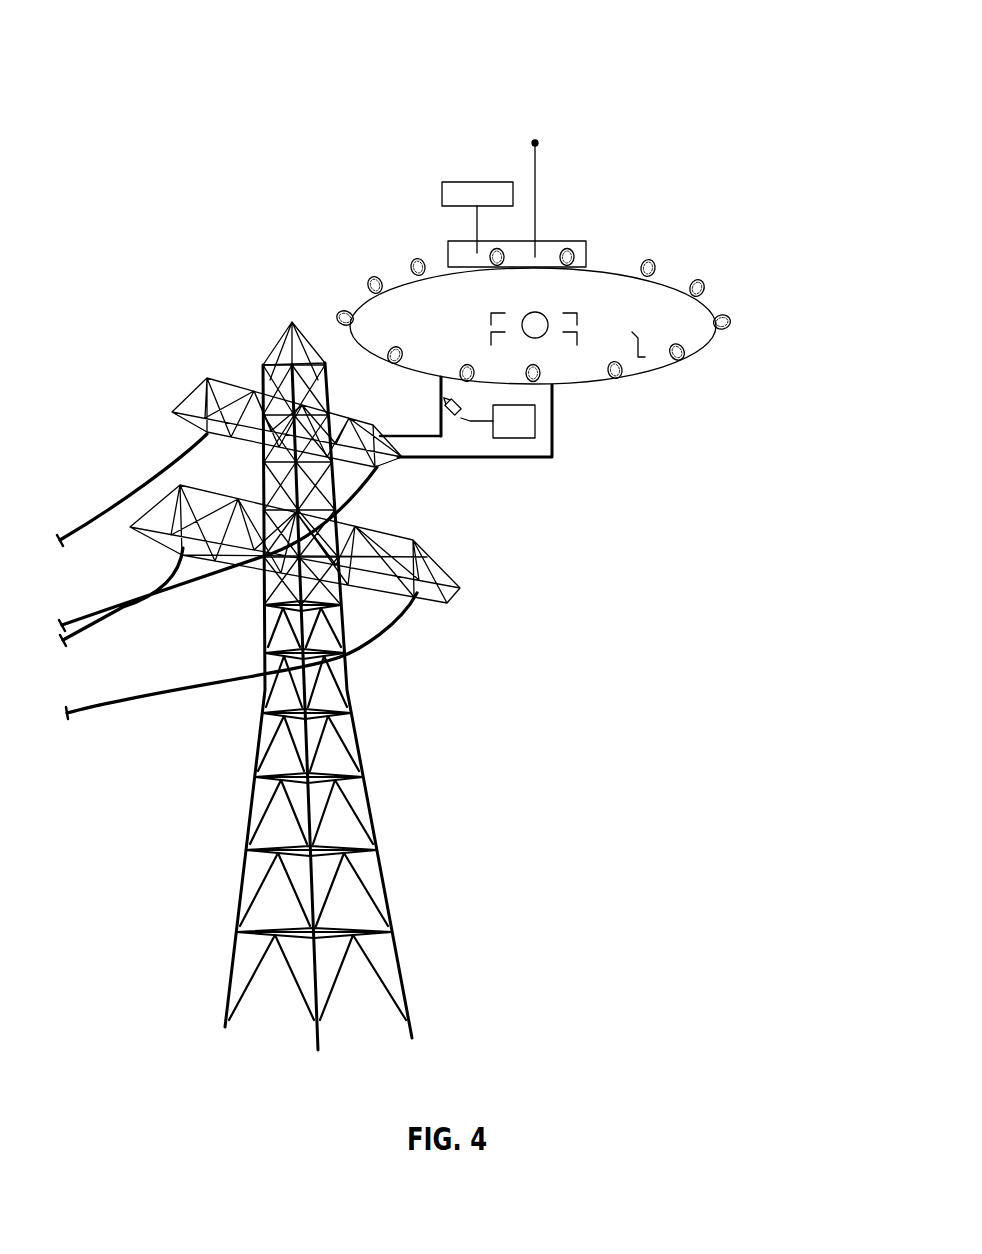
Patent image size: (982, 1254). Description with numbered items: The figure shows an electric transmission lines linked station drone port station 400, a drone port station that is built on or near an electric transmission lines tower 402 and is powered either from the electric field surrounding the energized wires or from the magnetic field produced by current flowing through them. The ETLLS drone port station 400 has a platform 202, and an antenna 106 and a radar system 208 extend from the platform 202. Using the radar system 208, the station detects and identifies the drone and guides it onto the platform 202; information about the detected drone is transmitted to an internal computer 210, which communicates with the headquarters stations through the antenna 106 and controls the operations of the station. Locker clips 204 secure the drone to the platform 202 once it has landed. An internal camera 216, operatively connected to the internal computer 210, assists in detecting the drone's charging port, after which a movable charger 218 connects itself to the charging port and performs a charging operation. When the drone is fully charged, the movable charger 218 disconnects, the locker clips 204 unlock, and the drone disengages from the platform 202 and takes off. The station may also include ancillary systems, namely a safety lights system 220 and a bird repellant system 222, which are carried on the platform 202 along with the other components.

The ETLLS drone port station 400 is at (700, 53).
The antenna 106 is at (537, 192).
The platform 202 is at (613, 283).
The locker clips 204 is at (492, 342).
The radar system 208 is at (473, 182).
The internal computer 210 is at (518, 438).
The internal camera 216 is at (450, 413).
The movable charger 218 is at (543, 357).
The safety lights system 220 is at (731, 317).
The bird repellant system 222 is at (645, 357).
The electric transmission lines tower 402 is at (221, 896).